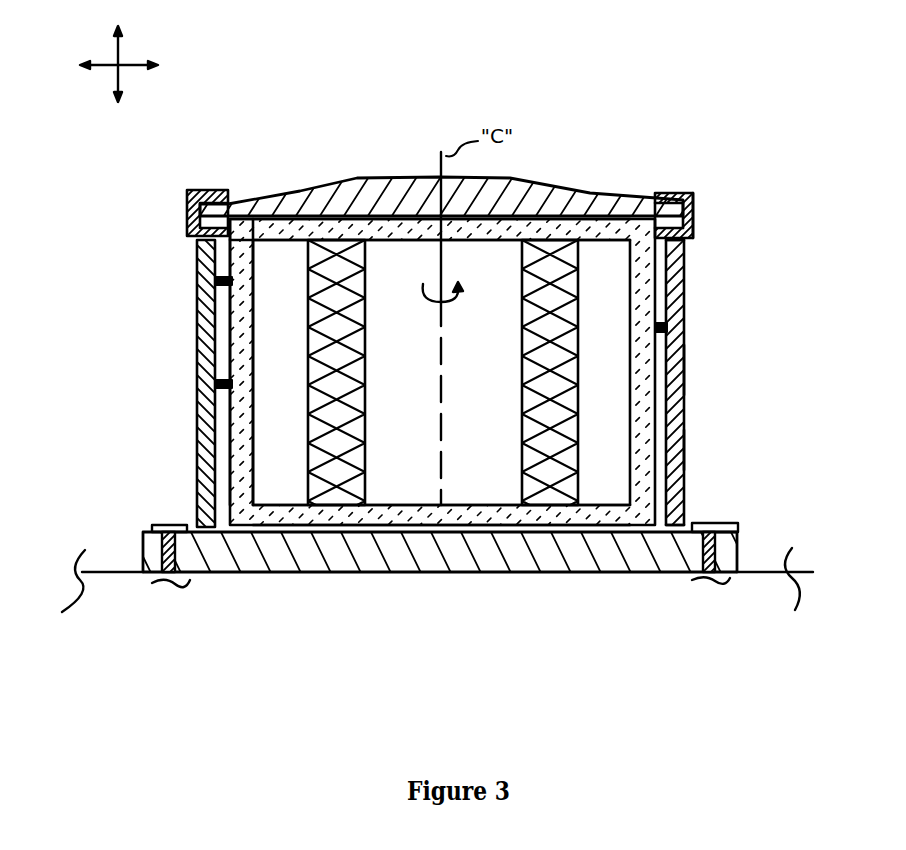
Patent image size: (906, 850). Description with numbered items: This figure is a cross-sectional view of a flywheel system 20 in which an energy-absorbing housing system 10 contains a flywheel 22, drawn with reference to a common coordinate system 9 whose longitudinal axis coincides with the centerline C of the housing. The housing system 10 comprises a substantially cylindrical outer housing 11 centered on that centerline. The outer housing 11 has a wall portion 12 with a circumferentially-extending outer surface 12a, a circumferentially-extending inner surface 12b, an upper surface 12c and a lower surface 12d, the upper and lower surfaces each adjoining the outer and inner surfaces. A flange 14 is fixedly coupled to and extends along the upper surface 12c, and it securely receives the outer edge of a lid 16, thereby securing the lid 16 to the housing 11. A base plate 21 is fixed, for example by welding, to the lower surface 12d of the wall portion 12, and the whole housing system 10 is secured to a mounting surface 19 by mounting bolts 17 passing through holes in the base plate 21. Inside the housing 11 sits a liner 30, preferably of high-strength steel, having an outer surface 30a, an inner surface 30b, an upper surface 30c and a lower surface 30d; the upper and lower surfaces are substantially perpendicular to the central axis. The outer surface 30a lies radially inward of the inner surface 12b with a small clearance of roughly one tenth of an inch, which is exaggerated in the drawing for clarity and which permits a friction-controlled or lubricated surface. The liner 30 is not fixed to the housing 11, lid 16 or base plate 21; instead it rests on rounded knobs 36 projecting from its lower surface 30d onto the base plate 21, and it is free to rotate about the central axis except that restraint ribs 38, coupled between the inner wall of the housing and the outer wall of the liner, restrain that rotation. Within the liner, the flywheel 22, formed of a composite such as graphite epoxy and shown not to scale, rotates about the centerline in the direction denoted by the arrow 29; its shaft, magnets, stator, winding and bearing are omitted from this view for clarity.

The coordinate system 9 is at (152, 40).
The flywheel system 20 is at (692, 115).
The lid 16 is at (349, 170).
The energy-absorbing housing system 10 is at (678, 186).
The flange 14 is at (694, 199).
The outer housing 11 is at (698, 298).
The wall portion 12 is at (696, 415).
The outer surface 12a is at (684, 368).
The inner surface 12b is at (685, 451).
The upper surface 12c is at (690, 250).
The lower surface 12d is at (684, 503).
The liner 30 is at (280, 208).
The outer surface 30a is at (197, 392).
The inner surface 30b is at (302, 238).
The upper surface 30c is at (250, 194).
The lower surface 30d is at (457, 512).
The restraint ribs 38 is at (197, 280).
The flywheel 22 is at (522, 266).
The arrow 29 is at (456, 282).
The base plate 21 is at (258, 573).
The knobs 36 is at (233, 540).
The mounting bolts 17 is at (160, 523).
The mounting surface 19 is at (86, 552).